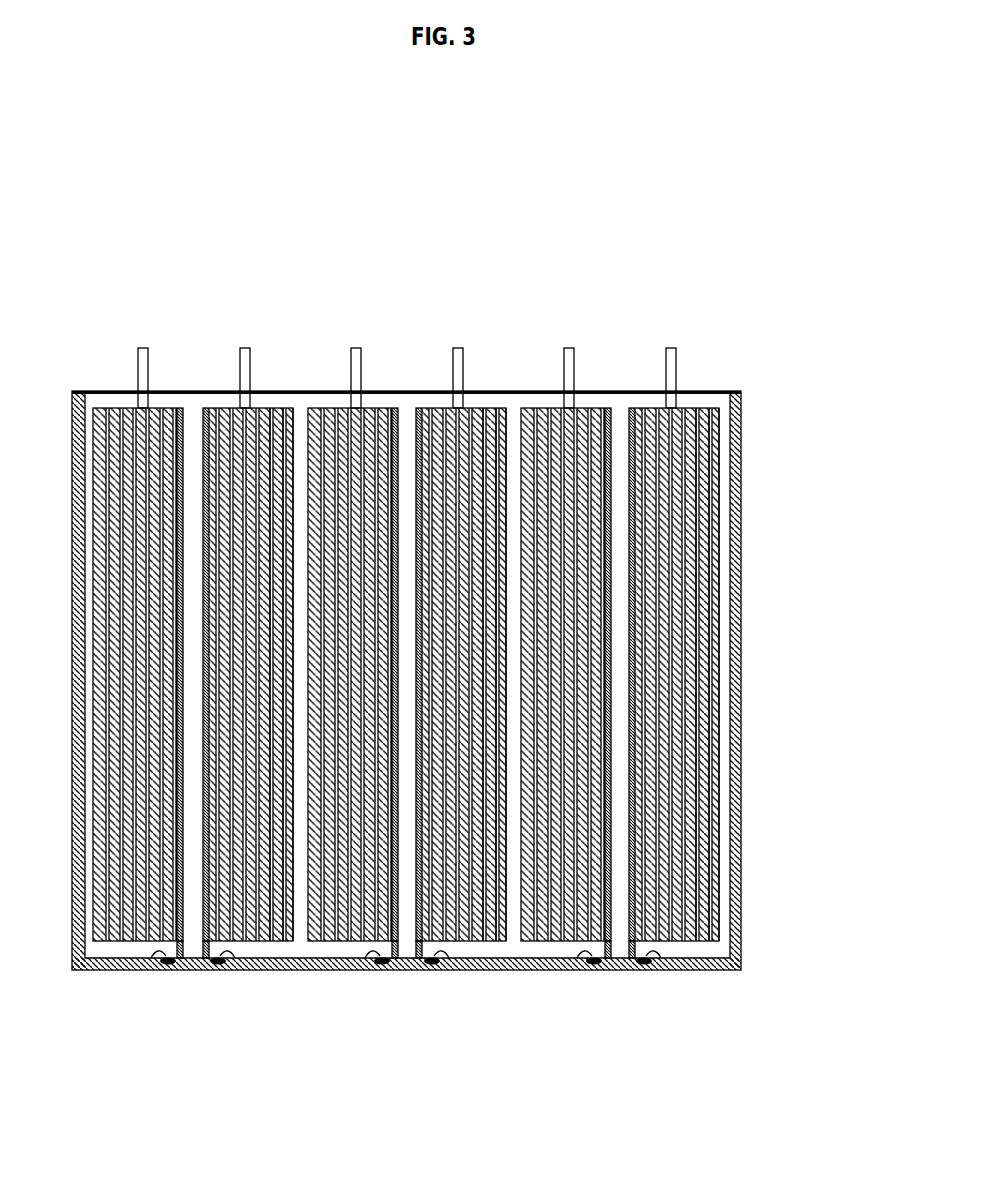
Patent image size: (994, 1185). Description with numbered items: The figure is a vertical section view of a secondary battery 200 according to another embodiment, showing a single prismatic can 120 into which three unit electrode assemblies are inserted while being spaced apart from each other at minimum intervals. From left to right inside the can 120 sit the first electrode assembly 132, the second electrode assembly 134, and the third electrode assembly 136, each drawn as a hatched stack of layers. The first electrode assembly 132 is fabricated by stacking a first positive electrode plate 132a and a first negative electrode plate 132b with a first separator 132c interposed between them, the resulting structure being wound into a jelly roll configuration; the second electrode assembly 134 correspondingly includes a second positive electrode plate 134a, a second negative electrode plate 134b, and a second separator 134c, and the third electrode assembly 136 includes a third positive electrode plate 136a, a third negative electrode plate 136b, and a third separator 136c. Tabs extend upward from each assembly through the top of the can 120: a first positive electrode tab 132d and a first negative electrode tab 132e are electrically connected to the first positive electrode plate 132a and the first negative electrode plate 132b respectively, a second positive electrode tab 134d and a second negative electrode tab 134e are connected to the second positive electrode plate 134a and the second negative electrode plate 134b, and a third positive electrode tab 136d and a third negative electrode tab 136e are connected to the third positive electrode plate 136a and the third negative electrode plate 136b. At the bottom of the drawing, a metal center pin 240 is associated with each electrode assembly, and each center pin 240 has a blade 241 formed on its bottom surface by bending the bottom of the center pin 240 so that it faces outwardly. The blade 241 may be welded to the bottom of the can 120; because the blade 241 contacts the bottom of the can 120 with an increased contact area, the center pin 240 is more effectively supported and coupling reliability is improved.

The secondary battery 200 is at (680, 177).
The can 120 is at (733, 629).
The first electrode assembly 132 is at (333, 300).
The first positive electrode plate 132a is at (280, 400).
The first negative electrode plate 132b is at (263, 400).
The first separator 132c is at (272, 400).
The first positive electrode tab 132d is at (135, 340).
The first negative electrode tab 132e is at (235, 340).
The second electrode assembly 134 is at (547, 300).
The second positive electrode plate 134a is at (491, 400).
The second negative electrode plate 134b is at (475, 400).
The second separator 134c is at (483, 400).
The second positive electrode tab 134d is at (348, 340).
The second negative electrode tab 134e is at (448, 340).
The third electrode assembly 136 is at (759, 300).
The third positive electrode plate 136a is at (706, 400).
The third negative electrode plate 136b is at (688, 400).
The third separator 136c is at (698, 400).
The third positive electrode tab 136d is at (561, 340).
The third negative electrode tab 136e is at (661, 340).
The center pin 240 is at (185, 938).
The blade 241 is at (143, 945).